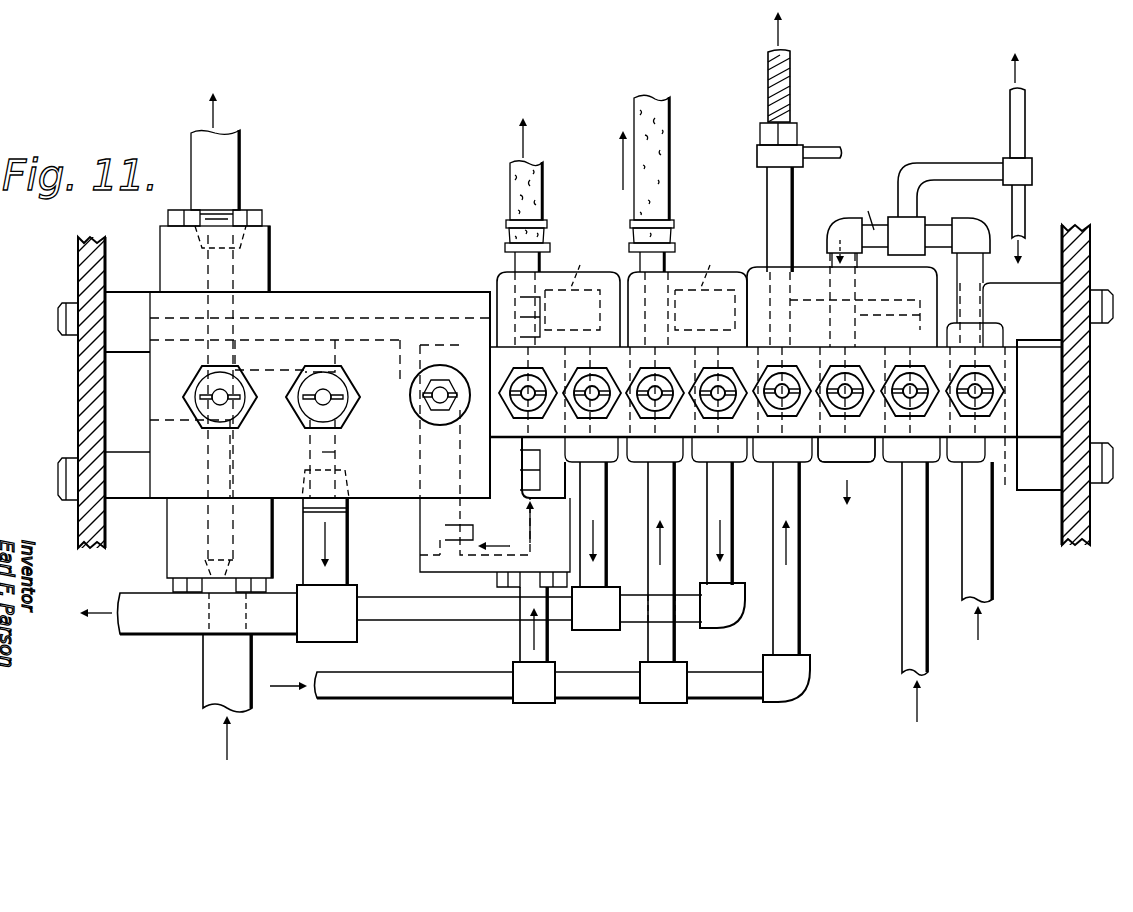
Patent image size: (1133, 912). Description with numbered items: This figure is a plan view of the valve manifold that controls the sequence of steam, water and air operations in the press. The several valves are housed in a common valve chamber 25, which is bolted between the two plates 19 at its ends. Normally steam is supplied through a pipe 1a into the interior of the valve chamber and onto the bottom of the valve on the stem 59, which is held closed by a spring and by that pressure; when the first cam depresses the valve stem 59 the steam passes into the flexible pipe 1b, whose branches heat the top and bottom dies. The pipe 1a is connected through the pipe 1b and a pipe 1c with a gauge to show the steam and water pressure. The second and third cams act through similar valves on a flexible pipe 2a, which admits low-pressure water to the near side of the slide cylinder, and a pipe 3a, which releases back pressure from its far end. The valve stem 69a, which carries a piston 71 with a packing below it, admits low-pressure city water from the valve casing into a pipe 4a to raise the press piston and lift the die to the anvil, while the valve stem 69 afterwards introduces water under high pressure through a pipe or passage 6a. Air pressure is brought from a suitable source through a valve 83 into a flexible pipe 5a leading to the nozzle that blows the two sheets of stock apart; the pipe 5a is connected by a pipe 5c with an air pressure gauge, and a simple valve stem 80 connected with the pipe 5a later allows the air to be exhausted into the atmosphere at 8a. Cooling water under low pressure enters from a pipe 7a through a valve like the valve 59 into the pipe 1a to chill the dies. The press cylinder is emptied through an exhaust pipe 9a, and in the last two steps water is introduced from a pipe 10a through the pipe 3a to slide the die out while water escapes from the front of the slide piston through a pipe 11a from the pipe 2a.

The pipe 4a is at (225, 180).
The valve chamber 25 is at (400, 300).
The frame plate 19 is at (88, 378).
The valve stem 69 is at (226, 405).
The valve stem 69a is at (434, 393).
The piston 71 is at (452, 414).
The exhaust pipe 9a is at (342, 548).
The pipe or passage 6a is at (212, 660).
The flexible pipe 2a is at (543, 200).
The pipe 3a is at (670, 180).
The pipe 11a is at (596, 496).
The pipe 10a is at (677, 509).
The pipe 7a is at (801, 555).
The exhaust 8a is at (850, 450).
The pipe 1a is at (903, 621).
The pipe 5a is at (1020, 193).
The pipe 5c is at (1010, 124).
The pipe 1b is at (788, 64).
The pipe 1c is at (830, 162).
The valve stem 80 is at (850, 388).
The valve stem 59 is at (915, 388).
The valve 83 is at (982, 389).